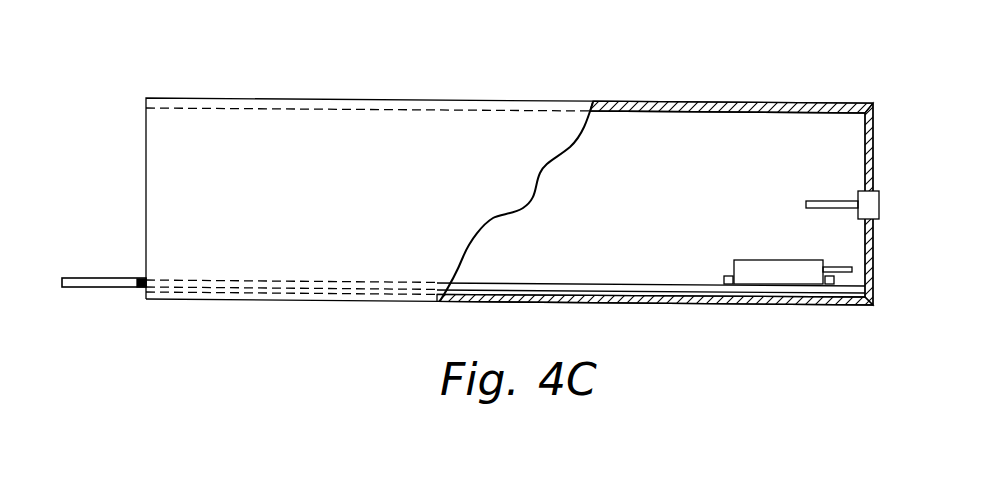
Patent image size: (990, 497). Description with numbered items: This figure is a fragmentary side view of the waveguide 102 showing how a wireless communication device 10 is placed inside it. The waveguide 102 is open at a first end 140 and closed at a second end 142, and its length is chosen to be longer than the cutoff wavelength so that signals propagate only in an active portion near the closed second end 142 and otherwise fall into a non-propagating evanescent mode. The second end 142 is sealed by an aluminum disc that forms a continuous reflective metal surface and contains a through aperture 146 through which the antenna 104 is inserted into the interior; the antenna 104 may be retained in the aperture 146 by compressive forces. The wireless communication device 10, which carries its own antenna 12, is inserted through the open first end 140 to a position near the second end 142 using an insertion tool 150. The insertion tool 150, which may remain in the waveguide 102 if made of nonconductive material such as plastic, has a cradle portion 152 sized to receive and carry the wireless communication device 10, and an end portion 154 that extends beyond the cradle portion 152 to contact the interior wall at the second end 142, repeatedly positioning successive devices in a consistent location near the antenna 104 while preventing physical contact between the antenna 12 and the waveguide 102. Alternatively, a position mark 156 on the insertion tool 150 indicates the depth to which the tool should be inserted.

The wireless communication device 10 is at (750, 285).
The antenna 12 is at (848, 286).
The waveguide 102 is at (250, 98).
The antenna 104 is at (843, 200).
The first end 140 is at (146, 185).
The second end 142 is at (874, 160).
The through aperture 146 is at (886, 201).
The insertion tool 150 is at (105, 288).
The cradle portion 152 is at (714, 284).
The end portion 154 is at (862, 290).
The position mark 156 is at (140, 278).